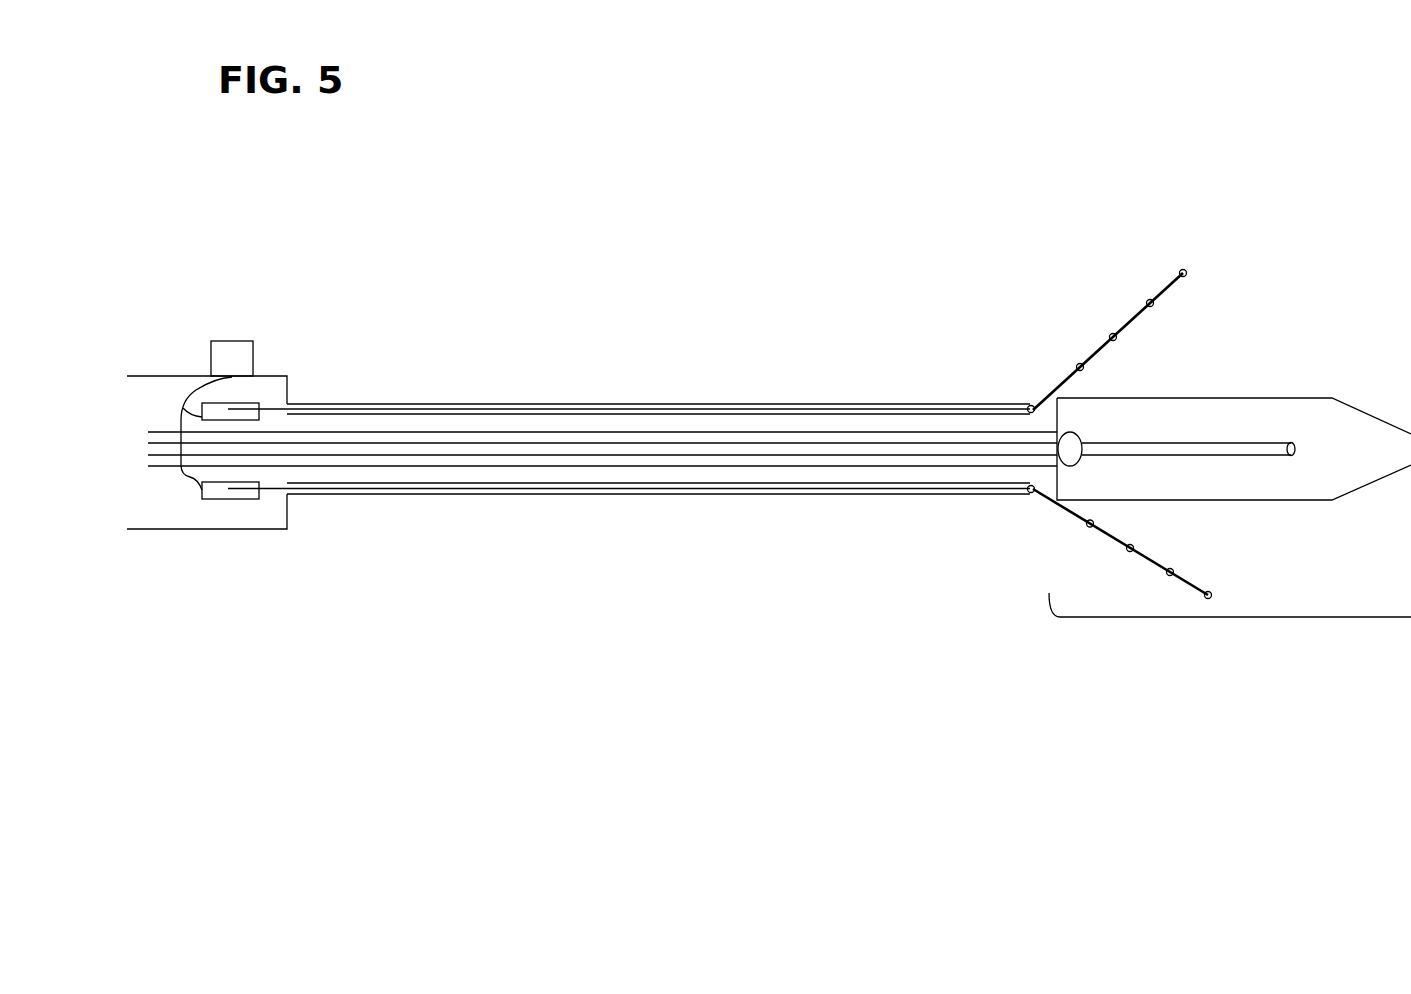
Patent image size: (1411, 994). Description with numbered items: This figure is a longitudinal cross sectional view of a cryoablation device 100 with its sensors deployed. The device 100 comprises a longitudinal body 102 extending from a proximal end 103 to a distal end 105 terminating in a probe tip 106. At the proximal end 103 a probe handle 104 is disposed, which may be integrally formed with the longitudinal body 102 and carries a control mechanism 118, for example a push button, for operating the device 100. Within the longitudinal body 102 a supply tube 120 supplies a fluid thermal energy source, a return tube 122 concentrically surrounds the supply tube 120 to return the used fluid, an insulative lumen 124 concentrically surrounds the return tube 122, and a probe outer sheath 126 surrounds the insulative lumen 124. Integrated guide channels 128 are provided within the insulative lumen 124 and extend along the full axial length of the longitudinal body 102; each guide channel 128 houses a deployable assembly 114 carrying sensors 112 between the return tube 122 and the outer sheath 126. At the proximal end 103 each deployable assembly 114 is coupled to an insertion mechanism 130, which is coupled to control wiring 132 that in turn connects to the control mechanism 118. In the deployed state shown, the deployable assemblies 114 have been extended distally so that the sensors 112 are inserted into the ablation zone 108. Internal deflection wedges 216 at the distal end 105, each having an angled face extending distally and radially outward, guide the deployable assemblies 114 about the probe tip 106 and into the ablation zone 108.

The device 100 is at (652, 212).
The longitudinal body 102 is at (728, 373).
The proximal end 103 is at (297, 728).
The probe handle 104 is at (153, 531).
The distal end 105 is at (1238, 725).
The probe tip 106 is at (1314, 378).
The ablation zone 108 is at (1243, 617).
The sensors 112 is at (1183, 273).
The deployable assembly 114 is at (810, 408).
The control mechanism 118 is at (235, 358).
The supply tube 120 is at (1142, 445).
The return tube 122 is at (1040, 432).
The insulative lumen 124 is at (795, 478).
The probe outer sheath 126 is at (517, 497).
The integrated guide channel 128 is at (558, 407).
The insertion mechanism 130 is at (232, 500).
The control wiring 132 is at (190, 378).
The internal deflection wedge 216 is at (1042, 498).